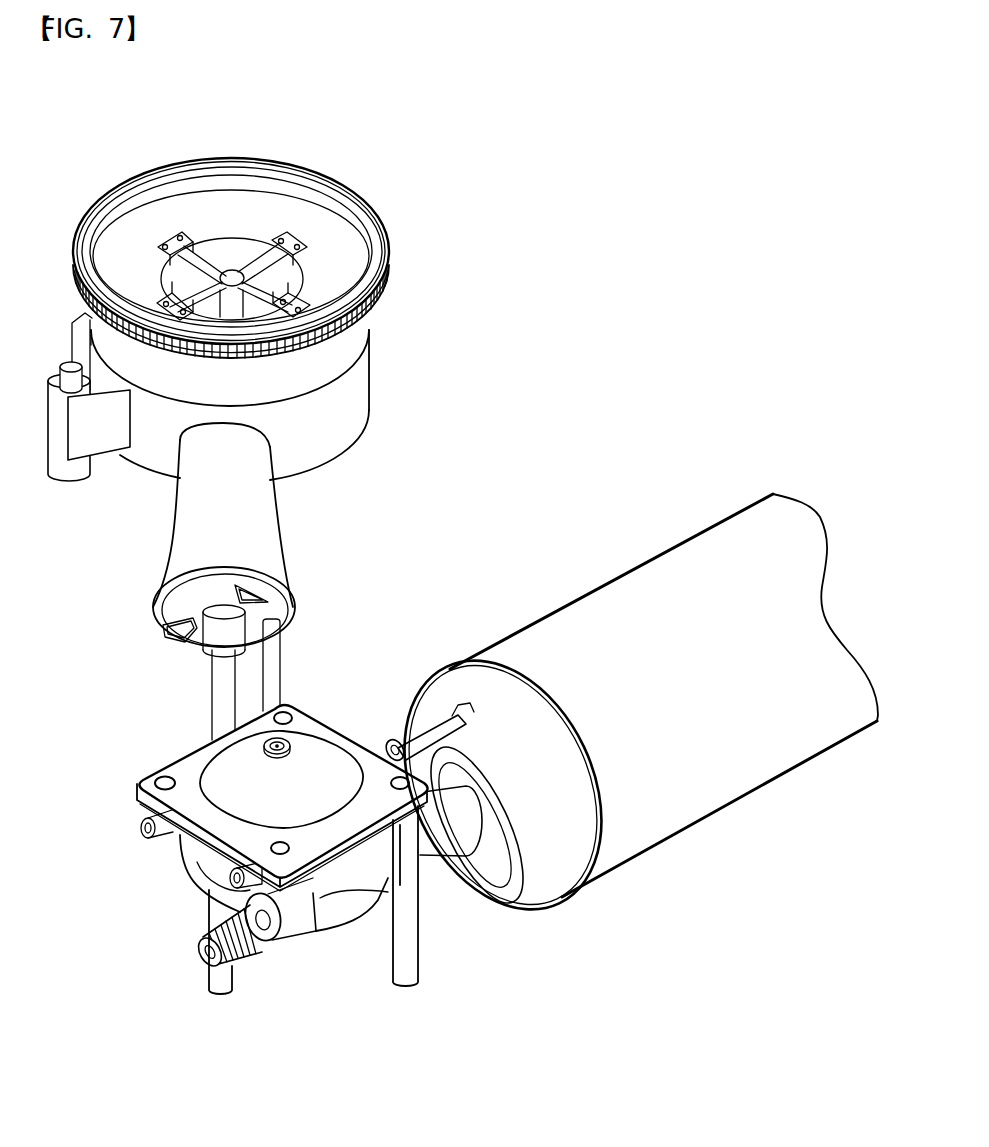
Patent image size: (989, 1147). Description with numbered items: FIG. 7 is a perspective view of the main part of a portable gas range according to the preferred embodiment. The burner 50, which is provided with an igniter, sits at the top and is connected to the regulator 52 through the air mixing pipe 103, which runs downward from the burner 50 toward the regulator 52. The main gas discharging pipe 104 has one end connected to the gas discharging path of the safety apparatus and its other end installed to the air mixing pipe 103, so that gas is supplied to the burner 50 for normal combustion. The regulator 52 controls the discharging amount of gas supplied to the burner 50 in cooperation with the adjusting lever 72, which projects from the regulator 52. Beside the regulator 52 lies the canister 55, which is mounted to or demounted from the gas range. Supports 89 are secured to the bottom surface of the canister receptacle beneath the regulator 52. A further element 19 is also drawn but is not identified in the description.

The burner 50 is at (278, 207).
The air mixing pipe 103 is at (252, 505).
The main gas discharging pipe 104 is at (220, 683).
The pipe 19 is at (273, 668).
The regulator 52 is at (180, 768).
The adjusting lever 72 is at (208, 917).
The support 89 is at (232, 975).
The canister 55 is at (687, 777).